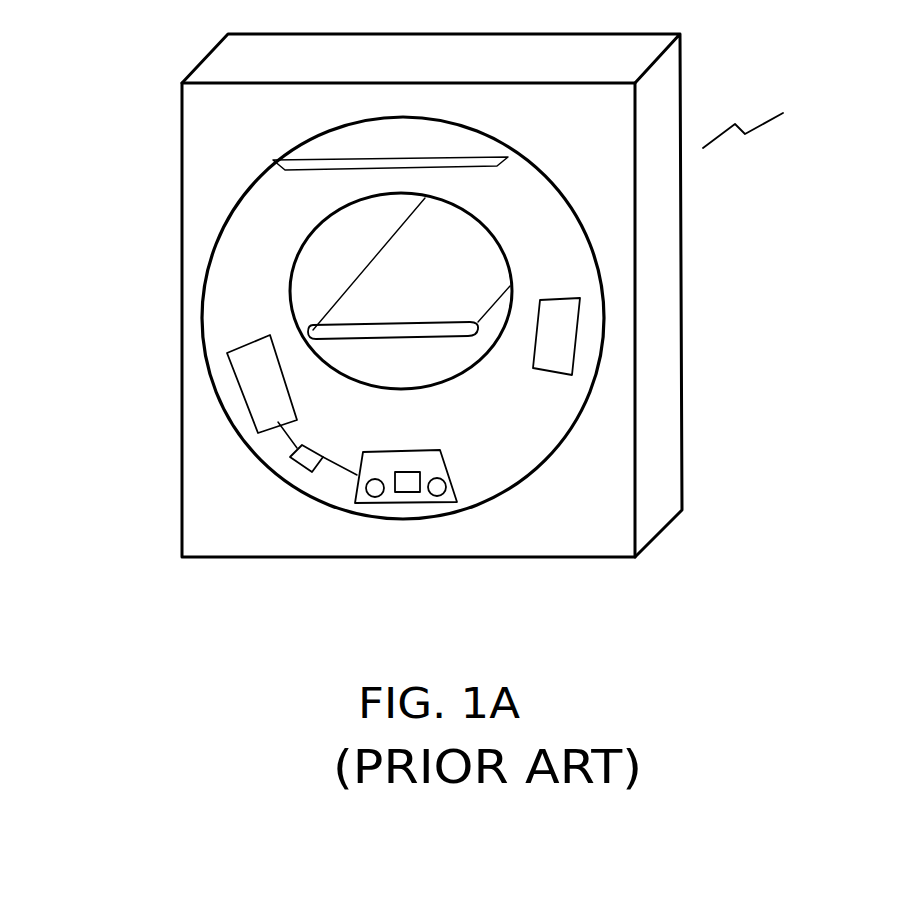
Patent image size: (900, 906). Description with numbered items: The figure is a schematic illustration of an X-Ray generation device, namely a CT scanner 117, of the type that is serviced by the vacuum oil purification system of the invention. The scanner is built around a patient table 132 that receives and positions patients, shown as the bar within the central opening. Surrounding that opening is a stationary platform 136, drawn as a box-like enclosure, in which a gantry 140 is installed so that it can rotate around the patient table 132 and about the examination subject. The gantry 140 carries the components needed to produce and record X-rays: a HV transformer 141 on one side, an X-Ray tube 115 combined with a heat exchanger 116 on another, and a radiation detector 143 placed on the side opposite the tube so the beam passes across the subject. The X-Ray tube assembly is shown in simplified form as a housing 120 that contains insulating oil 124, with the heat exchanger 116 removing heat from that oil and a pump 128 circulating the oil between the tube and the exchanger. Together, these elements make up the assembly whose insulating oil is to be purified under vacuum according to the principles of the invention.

The X-Ray tube 115 is at (422, 492).
The heat exchanger 116 is at (235, 384).
The CT scanner 117 is at (774, 121).
The housing 120 is at (450, 470).
The insulating oil 124 is at (428, 465).
The pump 128 is at (316, 448).
The patient table 132 is at (308, 330).
The stationary platform 136 is at (190, 122).
The gantry 140 is at (230, 265).
The HV transformer 141 is at (560, 298).
The radiation detector 143 is at (483, 168).